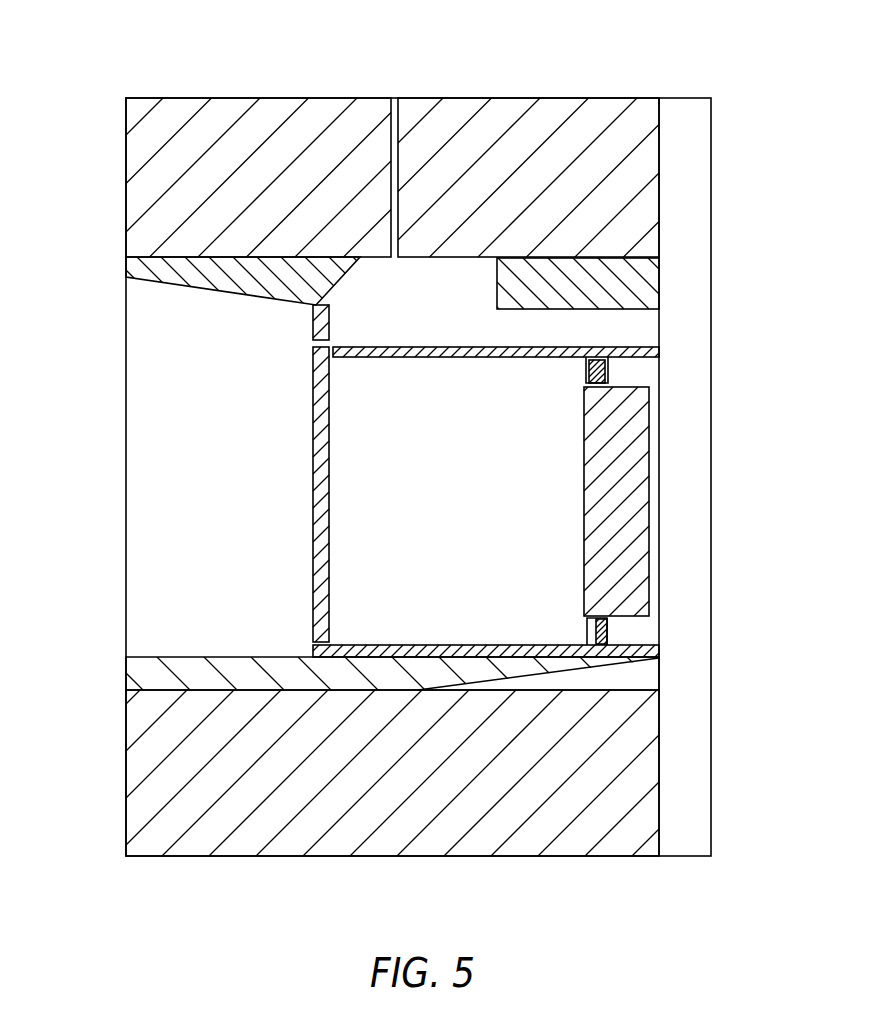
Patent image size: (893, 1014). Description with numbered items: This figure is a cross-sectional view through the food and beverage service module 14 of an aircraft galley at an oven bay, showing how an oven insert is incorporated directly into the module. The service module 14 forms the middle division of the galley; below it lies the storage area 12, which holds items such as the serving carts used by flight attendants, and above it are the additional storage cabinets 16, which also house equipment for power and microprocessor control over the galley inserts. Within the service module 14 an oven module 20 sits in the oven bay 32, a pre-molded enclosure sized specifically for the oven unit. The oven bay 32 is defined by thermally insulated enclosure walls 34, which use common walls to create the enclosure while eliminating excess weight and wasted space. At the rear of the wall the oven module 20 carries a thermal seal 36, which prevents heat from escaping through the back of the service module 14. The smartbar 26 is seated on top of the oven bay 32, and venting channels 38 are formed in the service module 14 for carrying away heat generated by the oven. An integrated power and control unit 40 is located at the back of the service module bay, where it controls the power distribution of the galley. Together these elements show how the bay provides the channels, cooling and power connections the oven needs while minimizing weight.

The storage area 12 is at (126, 776).
The food and beverage service module 14 is at (126, 462).
The additional storage cabinets 16 is at (534, 110).
The oven module 20 is at (637, 508).
The smartbar 26 is at (312, 322).
The oven bay 32 is at (463, 507).
The thermally insulated enclosure walls 34 is at (320, 510).
The thermal seal 36 is at (600, 370).
The venting channels 38 is at (152, 264).
The integrated power and control unit 40 is at (637, 283).